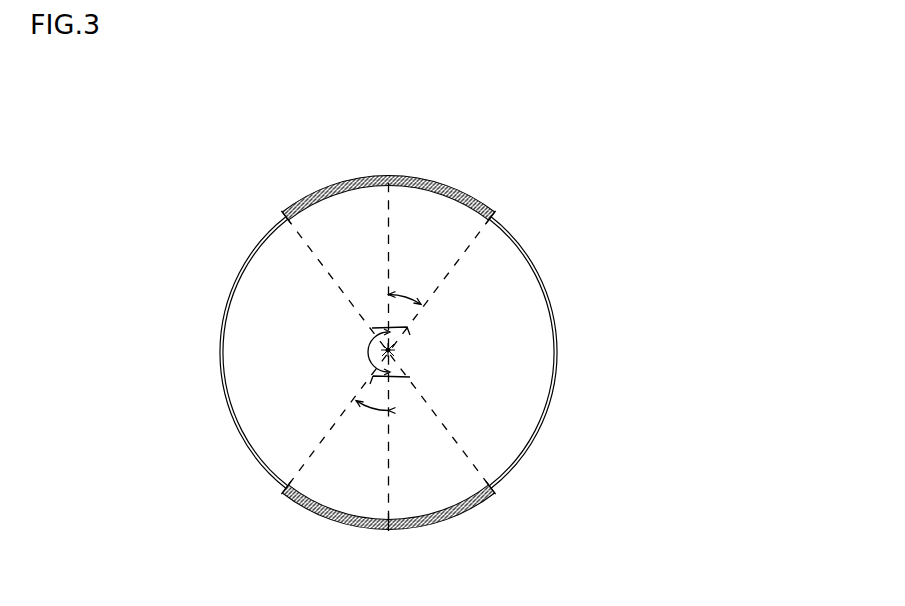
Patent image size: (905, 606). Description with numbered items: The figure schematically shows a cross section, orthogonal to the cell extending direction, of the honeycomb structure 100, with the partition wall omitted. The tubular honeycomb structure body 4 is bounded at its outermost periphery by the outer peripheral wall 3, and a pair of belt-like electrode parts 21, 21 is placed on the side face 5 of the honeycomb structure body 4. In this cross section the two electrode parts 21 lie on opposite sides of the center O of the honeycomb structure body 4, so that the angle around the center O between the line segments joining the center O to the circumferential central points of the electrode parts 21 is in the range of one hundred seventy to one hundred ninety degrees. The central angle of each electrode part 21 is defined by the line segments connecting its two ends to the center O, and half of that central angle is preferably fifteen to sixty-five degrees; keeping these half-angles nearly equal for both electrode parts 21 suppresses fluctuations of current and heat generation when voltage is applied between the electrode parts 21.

The honeycomb structure 100 is at (797, 88).
The electrode part 21 is at (420, 180).
The honeycomb structure body 4 is at (557, 345).
The side face 5 is at (263, 470).
The outer peripheral wall 3 is at (478, 471).
The center O is at (396, 355).